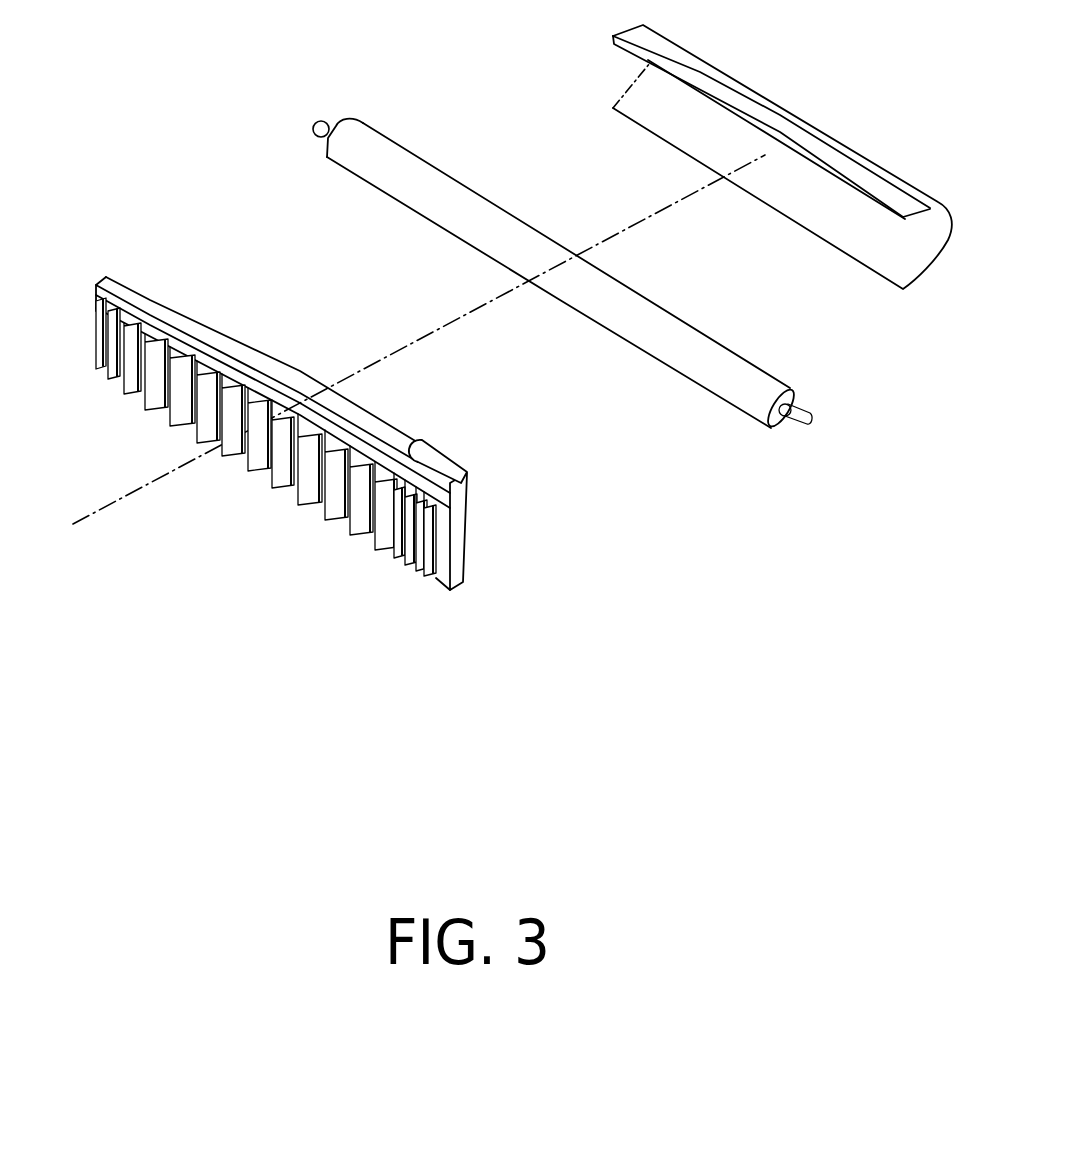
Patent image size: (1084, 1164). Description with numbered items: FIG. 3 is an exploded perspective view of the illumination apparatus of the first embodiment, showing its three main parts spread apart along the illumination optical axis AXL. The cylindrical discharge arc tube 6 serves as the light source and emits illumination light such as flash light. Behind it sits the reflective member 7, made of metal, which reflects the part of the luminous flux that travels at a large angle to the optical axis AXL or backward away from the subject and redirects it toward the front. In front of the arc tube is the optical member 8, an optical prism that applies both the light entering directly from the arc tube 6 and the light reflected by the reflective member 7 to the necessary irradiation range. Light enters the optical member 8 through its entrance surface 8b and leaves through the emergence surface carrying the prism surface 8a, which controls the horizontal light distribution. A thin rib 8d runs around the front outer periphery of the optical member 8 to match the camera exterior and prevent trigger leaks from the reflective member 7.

The arc tube 6 is at (712, 375).
The reflective member 7 is at (788, 122).
The optical member 8 is at (338, 430).
The prism surface 8a is at (282, 470).
The entrance surface 8b is at (463, 500).
The rib 8d is at (440, 432).
The illumination optical axis AXL is at (108, 507).